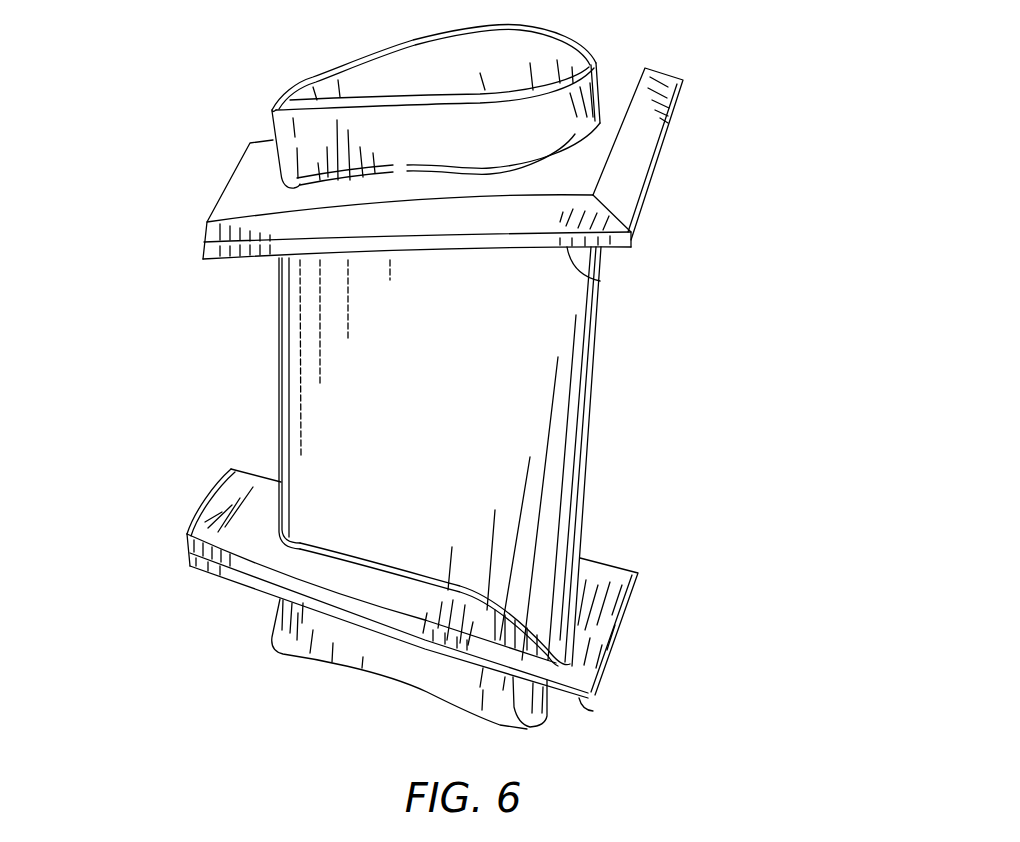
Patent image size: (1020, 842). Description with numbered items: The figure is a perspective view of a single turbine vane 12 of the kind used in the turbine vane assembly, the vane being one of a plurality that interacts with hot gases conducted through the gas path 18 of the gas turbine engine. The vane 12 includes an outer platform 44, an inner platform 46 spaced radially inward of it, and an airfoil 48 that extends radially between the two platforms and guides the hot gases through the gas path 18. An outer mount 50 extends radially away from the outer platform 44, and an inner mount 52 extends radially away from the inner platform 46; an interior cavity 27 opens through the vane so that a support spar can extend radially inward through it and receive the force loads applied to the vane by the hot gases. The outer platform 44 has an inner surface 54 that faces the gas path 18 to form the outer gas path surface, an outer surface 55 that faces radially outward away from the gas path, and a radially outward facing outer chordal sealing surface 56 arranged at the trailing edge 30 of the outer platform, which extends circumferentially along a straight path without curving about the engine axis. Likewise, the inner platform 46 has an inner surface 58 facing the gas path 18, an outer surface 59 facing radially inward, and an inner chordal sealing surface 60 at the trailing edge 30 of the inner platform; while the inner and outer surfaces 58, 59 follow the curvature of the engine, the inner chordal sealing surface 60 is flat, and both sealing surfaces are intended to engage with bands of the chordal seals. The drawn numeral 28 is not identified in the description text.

The turbine vane 12 is at (767, 106).
The gas path 18 is at (612, 452).
The interior cavity 27 is at (398, 64).
The pressure side wall 28 is at (277, 307).
The trailing edge 30 is at (603, 367).
The outer platform 44 is at (226, 172).
The inner platform 46 is at (172, 552).
The airfoil 48 is at (268, 353).
The outer mount 50 is at (288, 85).
The inner mount 52 is at (272, 652).
The inner surface 54 is at (600, 281).
The outer surface 55 is at (628, 87).
The outer chordal sealing surface 56 is at (630, 148).
The inner surface 58 is at (597, 577).
The outer surface 59 is at (533, 727).
The inner chordal sealing surface 60 is at (590, 710).